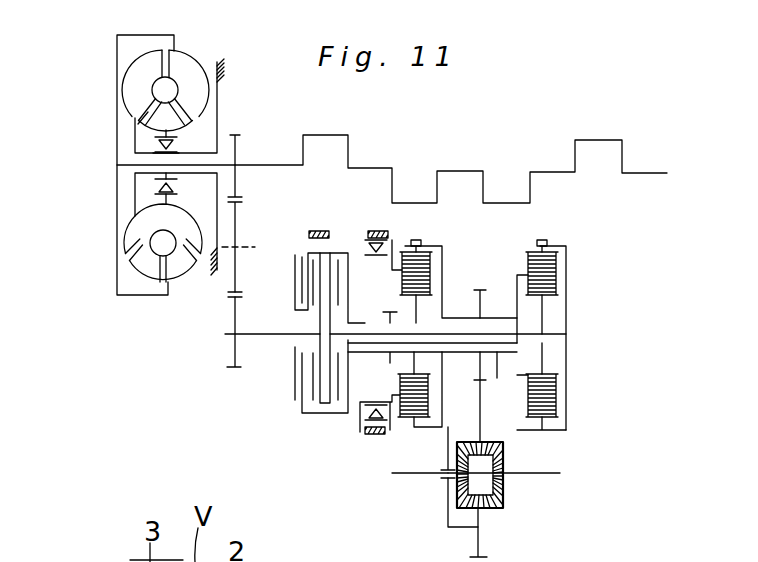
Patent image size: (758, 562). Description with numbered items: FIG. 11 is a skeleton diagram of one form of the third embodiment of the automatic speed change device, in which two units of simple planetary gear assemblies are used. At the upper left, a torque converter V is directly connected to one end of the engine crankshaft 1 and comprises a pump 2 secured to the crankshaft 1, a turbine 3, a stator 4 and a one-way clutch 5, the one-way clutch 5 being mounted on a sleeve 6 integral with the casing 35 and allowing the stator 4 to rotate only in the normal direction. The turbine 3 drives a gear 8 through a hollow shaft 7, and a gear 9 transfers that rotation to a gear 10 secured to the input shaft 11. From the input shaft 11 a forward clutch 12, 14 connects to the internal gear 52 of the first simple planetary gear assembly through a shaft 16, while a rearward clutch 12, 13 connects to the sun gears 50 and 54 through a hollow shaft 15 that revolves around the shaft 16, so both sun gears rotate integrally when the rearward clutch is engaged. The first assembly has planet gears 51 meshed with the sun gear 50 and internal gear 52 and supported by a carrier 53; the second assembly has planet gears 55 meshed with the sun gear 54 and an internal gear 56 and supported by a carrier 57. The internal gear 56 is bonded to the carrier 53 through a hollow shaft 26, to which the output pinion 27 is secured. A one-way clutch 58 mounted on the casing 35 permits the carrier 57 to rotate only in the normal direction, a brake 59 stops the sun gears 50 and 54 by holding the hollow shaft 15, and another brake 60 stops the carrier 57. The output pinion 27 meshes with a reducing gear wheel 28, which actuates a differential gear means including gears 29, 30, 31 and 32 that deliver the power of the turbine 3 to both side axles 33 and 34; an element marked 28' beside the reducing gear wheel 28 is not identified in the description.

The torque converter V is at (183, 50).
The engine crankshaft 1 is at (287, 164).
The pump 2 is at (195, 78).
The turbine 3 is at (146, 66).
The stator 4 is at (158, 114).
The one-way clutch 5 is at (172, 144).
The sleeve 6 is at (208, 152).
The hollow shaft 7 is at (237, 150).
The gear 8 is at (243, 198).
The gear 9 is at (228, 292).
The gear 10 is at (228, 322).
The input shaft 11 is at (258, 332).
The clutch 12 is at (294, 370).
The rearward clutch 13 is at (297, 272).
The forward clutch 14 is at (345, 252).
The hollow shaft 15 is at (525, 348).
The shaft 16 is at (555, 338).
The hollow shaft 26 is at (481, 392).
The output pinion 27 is at (463, 354).
The reducing gear wheel 28 is at (406, 407).
The bearing 28' is at (484, 440).
The gear 29 is at (500, 447).
The gear 30 is at (485, 506).
The gear 31 is at (460, 497).
The gear 32 is at (497, 481).
The side axle 33 is at (403, 474).
The side axle 34 is at (548, 474).
The casing 35 is at (222, 70).
The sun gear 50 is at (542, 312).
The planet gears 51 is at (556, 270).
The internal gear 52 is at (545, 241).
The carrier 53 is at (518, 273).
The sun gear 54 is at (418, 310).
The planet gears 55 is at (432, 272).
The internal gear 56 is at (420, 240).
The carrier 57 is at (394, 281).
The one-way clutch 58 is at (386, 246).
The brake 59 is at (318, 225).
The brake 60 is at (380, 232).